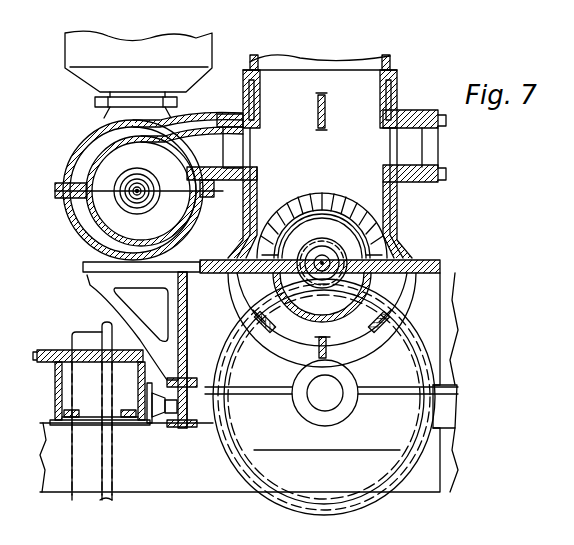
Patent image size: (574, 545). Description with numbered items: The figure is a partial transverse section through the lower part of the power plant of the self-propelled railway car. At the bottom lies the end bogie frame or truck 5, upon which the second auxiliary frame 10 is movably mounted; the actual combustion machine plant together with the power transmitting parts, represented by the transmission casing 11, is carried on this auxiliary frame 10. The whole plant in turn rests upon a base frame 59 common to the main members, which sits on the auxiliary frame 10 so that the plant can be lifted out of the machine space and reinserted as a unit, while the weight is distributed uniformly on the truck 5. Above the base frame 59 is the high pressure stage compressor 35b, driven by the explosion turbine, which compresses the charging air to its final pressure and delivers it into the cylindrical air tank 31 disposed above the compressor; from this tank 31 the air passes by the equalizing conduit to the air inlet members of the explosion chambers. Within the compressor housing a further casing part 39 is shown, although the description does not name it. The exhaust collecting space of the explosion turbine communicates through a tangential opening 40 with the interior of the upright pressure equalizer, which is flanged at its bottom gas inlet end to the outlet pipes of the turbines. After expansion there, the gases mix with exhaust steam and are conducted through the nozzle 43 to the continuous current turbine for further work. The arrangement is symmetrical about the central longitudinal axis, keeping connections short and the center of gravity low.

The air tank 31 is at (82, 60).
The high pressure stage compressor 35b is at (94, 142).
The pump inner casing 39 is at (105, 213).
The tangential opening 40 is at (233, 143).
The nozzle 43 is at (320, 196).
The base frame 59 is at (176, 320).
The end bogie frame 5 is at (120, 418).
The second auxiliary frame 10 is at (172, 428).
The transmission casing 11 is at (350, 502).